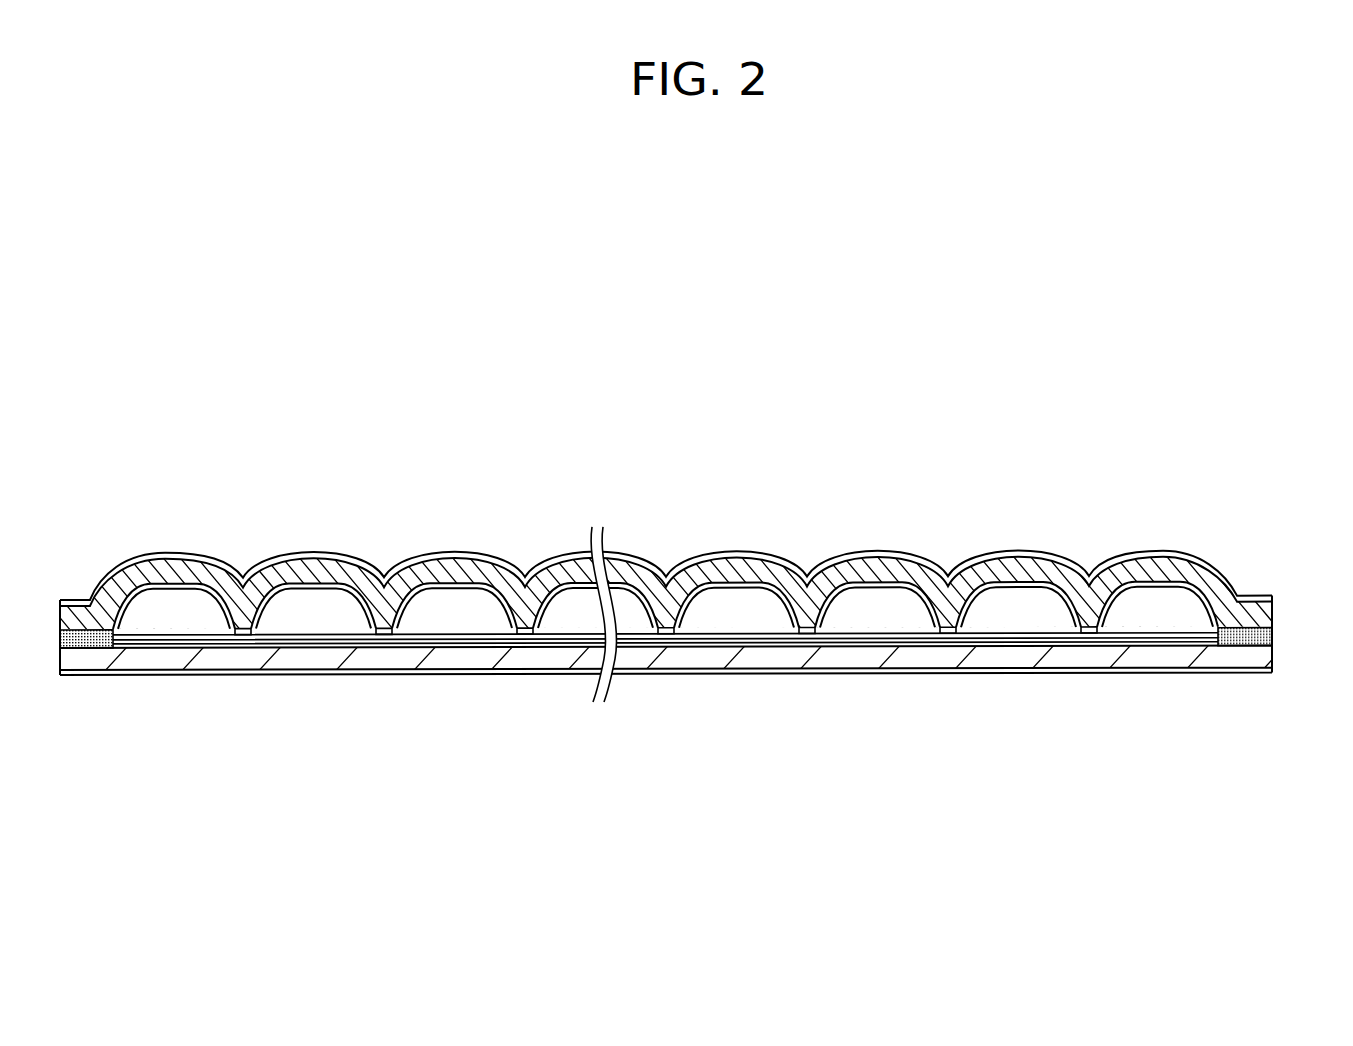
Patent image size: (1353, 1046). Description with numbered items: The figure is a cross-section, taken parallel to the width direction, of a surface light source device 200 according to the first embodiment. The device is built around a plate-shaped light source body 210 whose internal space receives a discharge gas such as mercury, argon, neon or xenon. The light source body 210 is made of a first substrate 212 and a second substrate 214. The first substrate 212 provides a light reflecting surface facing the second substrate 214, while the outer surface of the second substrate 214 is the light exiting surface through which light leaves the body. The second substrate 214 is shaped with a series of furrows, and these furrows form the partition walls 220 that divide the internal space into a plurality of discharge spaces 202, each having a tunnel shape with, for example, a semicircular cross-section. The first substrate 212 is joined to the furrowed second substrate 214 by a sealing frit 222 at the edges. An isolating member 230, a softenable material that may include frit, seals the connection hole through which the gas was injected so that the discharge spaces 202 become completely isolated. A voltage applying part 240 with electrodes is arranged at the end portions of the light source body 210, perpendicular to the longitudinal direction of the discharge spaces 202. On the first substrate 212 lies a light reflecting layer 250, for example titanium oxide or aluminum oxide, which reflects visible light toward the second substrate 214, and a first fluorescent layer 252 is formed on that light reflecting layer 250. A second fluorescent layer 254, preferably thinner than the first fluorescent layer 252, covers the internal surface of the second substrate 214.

The surface light source device 200 is at (762, 197).
The light source body 210 is at (632, 546).
The first substrate 212 is at (1242, 648).
The second substrate 214 is at (878, 574).
The partition wall 220 is at (1108, 606).
The sealing frit 222 is at (1272, 636).
The isolating member 230 is at (522, 636).
The voltage applying part 240 is at (1272, 600).
The light reflecting layer 250 is at (837, 650).
The first fluorescent layer 252 is at (740, 642).
The second fluorescent layer 254 is at (732, 583).
The discharge space 202 is at (1021, 601).